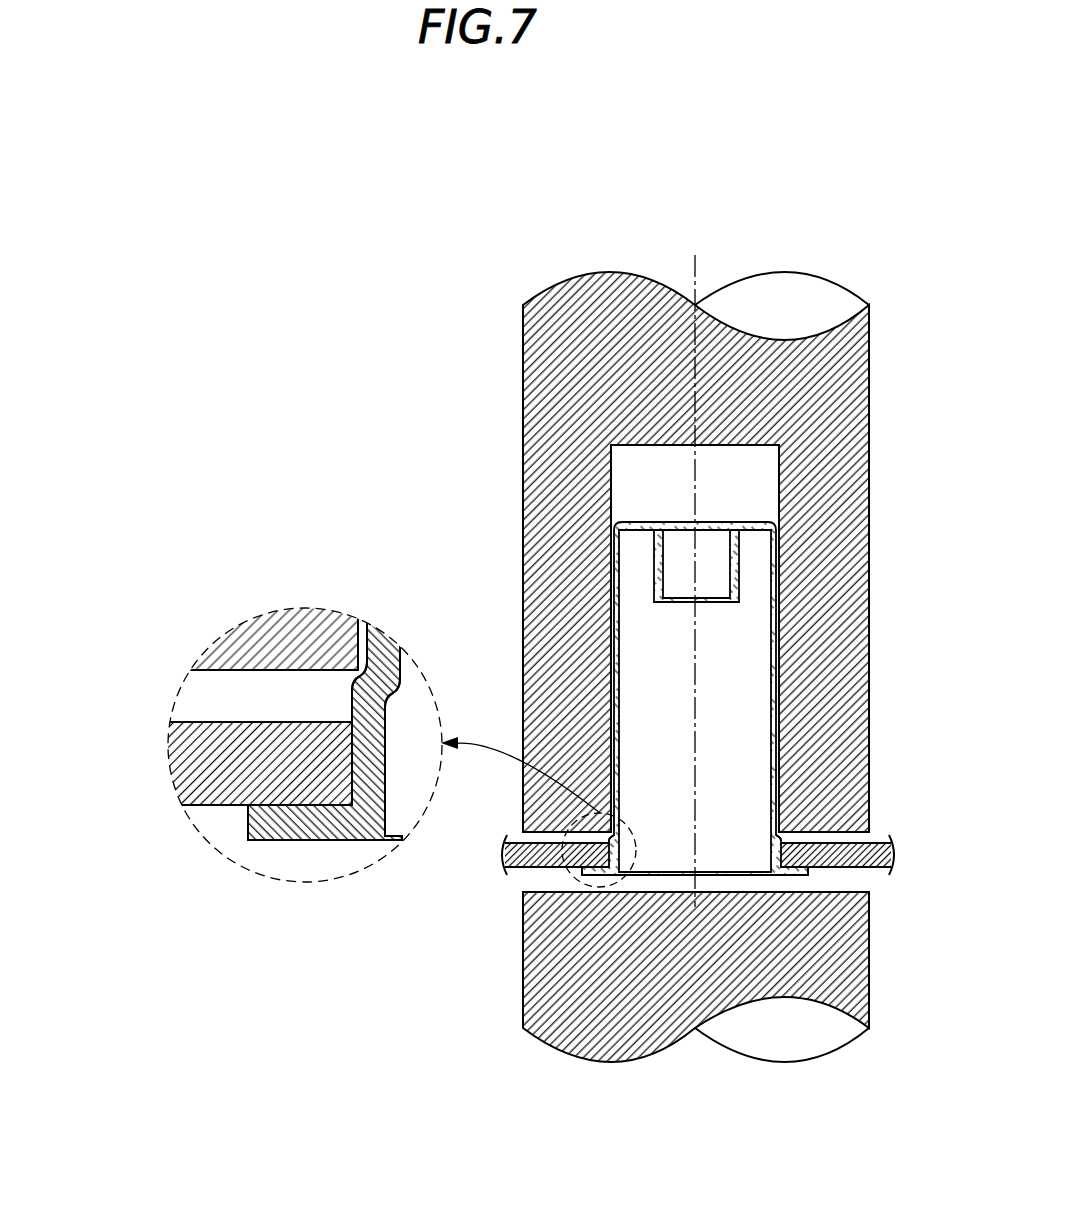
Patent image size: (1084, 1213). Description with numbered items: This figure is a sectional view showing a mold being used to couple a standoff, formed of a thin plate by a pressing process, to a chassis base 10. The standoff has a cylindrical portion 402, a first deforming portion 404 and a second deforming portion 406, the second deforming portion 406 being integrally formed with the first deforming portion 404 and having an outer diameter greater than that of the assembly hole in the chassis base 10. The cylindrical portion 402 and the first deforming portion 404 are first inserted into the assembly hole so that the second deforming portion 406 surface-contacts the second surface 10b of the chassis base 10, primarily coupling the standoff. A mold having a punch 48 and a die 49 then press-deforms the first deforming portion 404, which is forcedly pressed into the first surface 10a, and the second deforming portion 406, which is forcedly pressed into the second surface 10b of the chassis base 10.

The chassis base 10 is at (88, 688).
The first surface 10a is at (222, 721).
The second surface 10b is at (219, 806).
The punch 48 is at (845, 940).
The die 49 is at (842, 488).
The cylindrical portion 402 is at (378, 643).
The first deforming portion 404 is at (360, 707).
The second deforming portion 406 is at (318, 822).